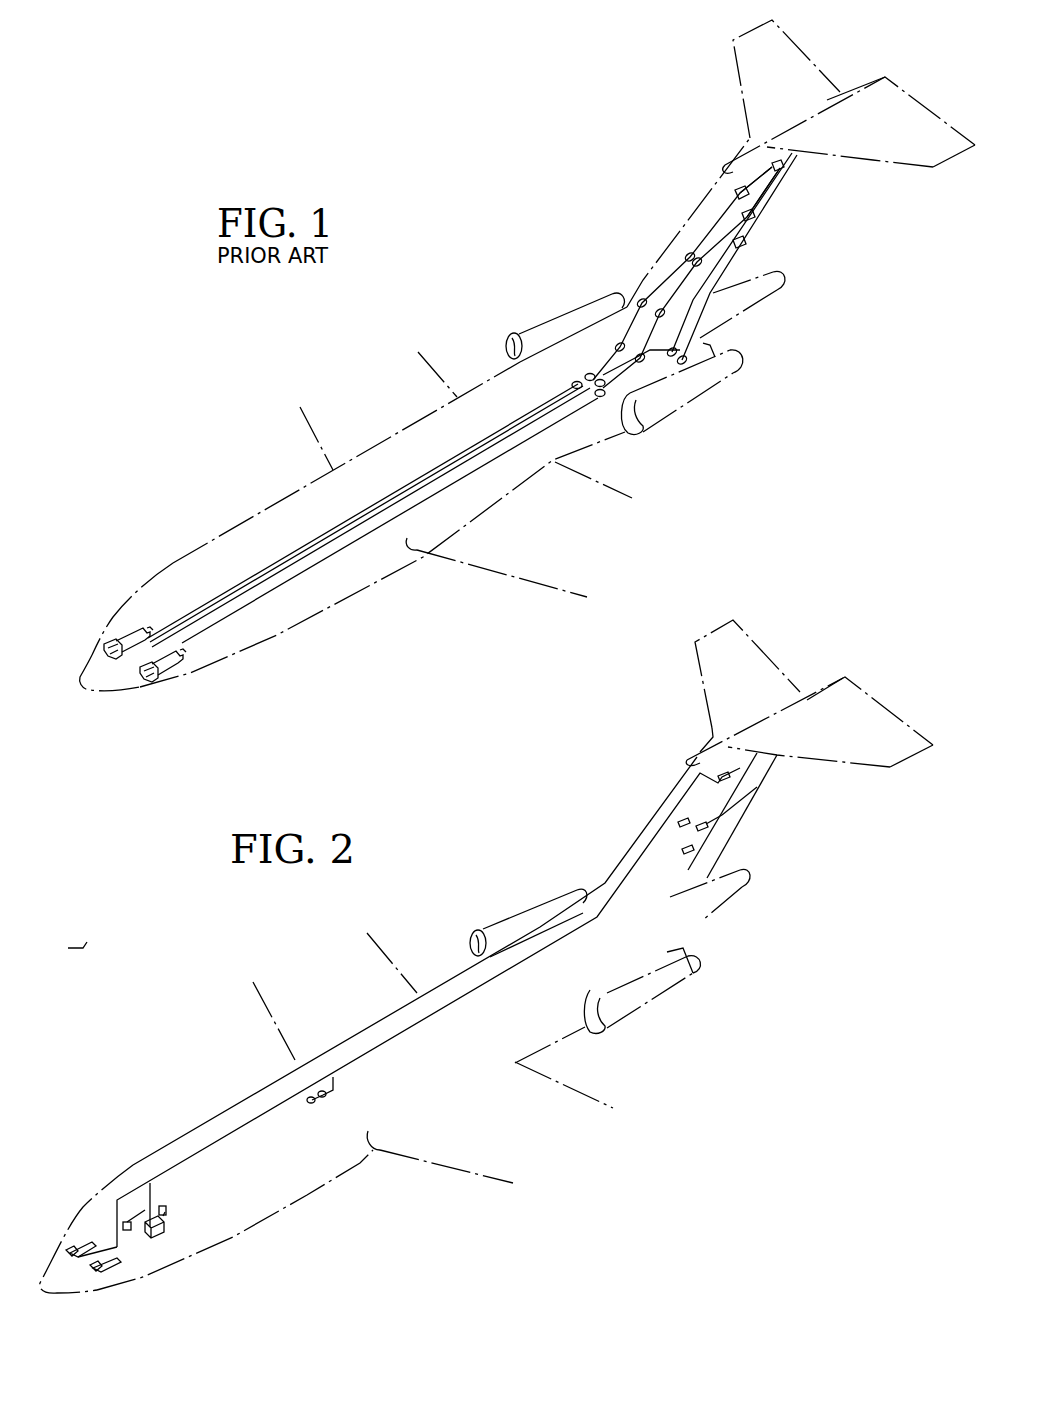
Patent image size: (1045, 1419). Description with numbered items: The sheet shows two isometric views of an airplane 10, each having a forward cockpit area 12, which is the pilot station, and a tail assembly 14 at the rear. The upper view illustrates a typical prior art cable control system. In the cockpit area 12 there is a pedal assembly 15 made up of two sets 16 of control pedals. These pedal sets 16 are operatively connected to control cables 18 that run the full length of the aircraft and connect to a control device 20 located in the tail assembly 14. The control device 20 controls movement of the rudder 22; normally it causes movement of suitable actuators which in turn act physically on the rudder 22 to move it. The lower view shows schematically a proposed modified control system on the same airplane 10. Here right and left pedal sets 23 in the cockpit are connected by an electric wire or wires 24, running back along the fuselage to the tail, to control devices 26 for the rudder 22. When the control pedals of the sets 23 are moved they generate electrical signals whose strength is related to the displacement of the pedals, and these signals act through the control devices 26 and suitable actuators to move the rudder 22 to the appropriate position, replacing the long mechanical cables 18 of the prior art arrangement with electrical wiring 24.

In FIG. 1, the airplane 10 is at (499, 255).
In FIG. 1, the forward cockpit area 12 is at (103, 598).
In FIG. 1, the tail assembly 14 is at (668, 182).
In FIG. 1, the pedal assembly 15 is at (134, 720).
In FIG. 1, the sets of control pedals 16 is at (107, 643).
In FIG. 1, the control cables 18 is at (347, 546).
In FIG. 1, the control device 20 is at (745, 244).
In FIG. 1, the rudder 22 is at (798, 180).
In FIG. 2, the rudder 22 is at (757, 783).
In FIG. 2, the right and left pedal sets 23 is at (77, 1258).
In FIG. 2, the electric wire or wires 24 is at (437, 1012).
In FIG. 2, the control devices 26 is at (686, 823).